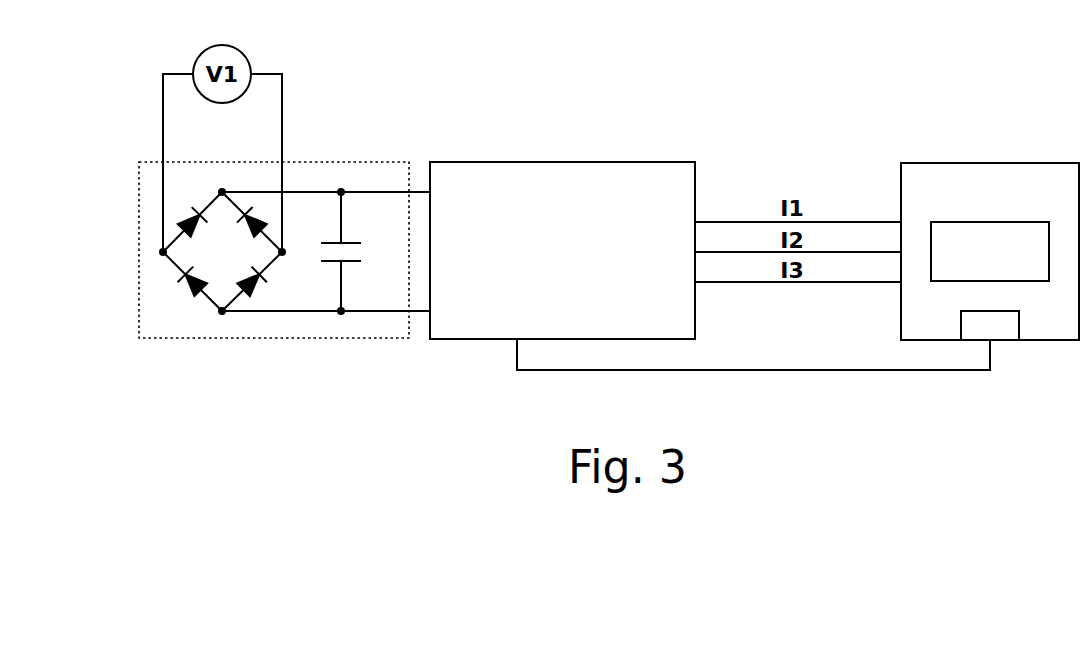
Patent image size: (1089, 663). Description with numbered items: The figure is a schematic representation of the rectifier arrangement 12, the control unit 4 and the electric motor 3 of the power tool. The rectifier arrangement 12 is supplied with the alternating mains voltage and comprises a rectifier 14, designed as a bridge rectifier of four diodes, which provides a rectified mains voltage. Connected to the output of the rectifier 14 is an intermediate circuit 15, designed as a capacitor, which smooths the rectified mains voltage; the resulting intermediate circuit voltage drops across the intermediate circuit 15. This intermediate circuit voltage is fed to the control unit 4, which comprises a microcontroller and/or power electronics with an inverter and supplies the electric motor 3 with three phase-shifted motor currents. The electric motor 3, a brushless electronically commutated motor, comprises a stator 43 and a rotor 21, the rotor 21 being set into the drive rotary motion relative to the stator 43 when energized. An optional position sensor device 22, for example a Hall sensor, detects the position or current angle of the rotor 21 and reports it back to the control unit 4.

The electric motor 3 is at (1074, 140).
The control unit 4 is at (562, 250).
The rectifier arrangement 12 is at (256, 264).
The rectifier 14 is at (176, 303).
The intermediate circuit 15 is at (320, 278).
The rotor 21 is at (990, 251).
The position sensor device 22 is at (990, 326).
The stator 43 is at (937, 162).